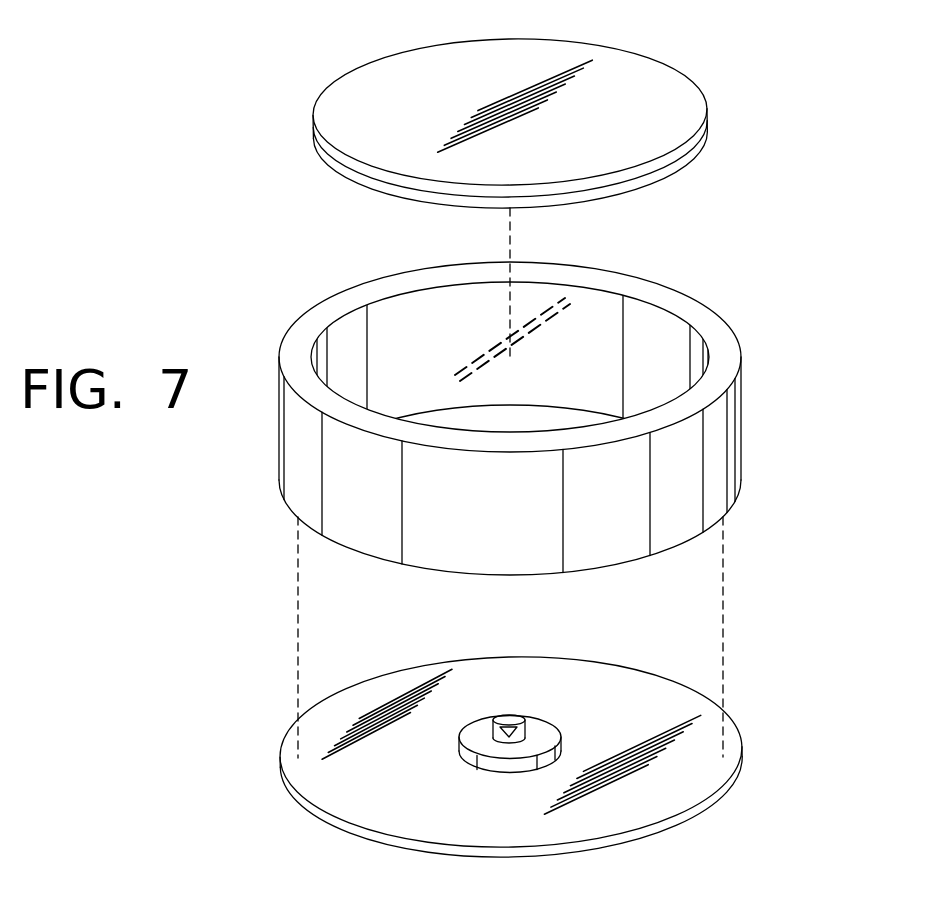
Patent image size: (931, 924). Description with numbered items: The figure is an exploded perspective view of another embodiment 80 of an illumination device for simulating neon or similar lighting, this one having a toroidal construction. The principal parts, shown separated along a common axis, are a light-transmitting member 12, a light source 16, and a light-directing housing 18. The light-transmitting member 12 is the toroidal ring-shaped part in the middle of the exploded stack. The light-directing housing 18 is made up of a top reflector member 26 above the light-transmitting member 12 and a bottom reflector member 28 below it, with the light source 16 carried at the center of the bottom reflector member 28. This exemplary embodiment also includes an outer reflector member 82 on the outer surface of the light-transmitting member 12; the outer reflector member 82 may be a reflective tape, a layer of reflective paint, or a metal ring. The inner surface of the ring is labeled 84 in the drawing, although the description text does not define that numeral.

The illumination device embodiment 80 is at (101, 93).
The light-directing housing 18 is at (630, 83).
The top reflector member 26 is at (683, 118).
The bottom reflector member 28 is at (693, 813).
The light source 16 is at (492, 738).
The light-transmitting member 12 is at (678, 307).
The outer reflector member 82 is at (717, 448).
The inner surface of ring 84 is at (437, 362).